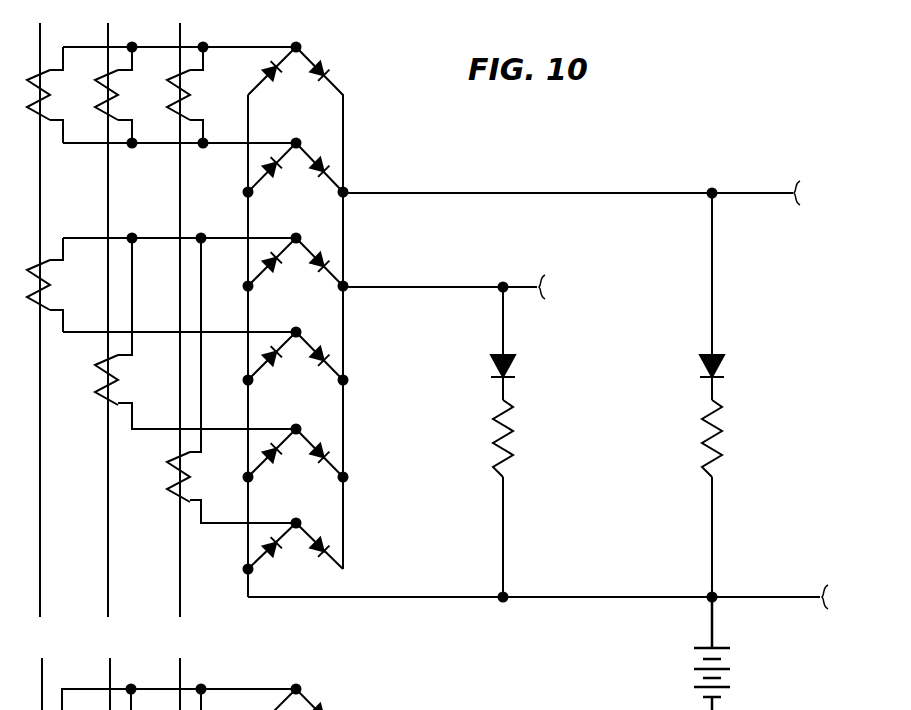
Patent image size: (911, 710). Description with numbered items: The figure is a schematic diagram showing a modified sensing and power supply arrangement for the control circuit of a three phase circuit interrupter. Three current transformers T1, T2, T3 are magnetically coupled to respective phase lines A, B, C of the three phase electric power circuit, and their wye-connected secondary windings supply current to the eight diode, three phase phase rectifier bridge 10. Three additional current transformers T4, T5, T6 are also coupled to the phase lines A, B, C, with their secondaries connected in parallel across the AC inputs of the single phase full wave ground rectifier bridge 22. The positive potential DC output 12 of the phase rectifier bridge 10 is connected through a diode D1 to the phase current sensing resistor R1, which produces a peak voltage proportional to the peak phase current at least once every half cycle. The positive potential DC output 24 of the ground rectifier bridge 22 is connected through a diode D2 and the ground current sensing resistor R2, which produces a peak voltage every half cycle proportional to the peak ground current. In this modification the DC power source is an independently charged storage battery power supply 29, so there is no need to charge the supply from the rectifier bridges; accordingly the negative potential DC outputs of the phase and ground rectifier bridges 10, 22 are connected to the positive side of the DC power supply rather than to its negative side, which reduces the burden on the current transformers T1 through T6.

The phase rectifier bridge 10 is at (305, 589).
The ground rectifier bridge 22 is at (302, 216).
The positive potential DC output of the phase rectifier bridge 12 is at (444, 281).
The positive potential DC output of the ground rectifier bridge 24 is at (571, 187).
The storage battery power supply 29 is at (725, 653).
The diode D1 is at (516, 366).
The diode D2 is at (725, 366).
The phase current sensing resistor R1 is at (517, 438).
The ground current sensing resistor R2 is at (726, 438).
The current transformer T1 is at (50, 285).
The current transformer T2 is at (195, 333).
The current transformer T3 is at (231, 380).
The current transformer T4 is at (50, 95).
The current transformer T5 is at (118, 95).
The current transformer T6 is at (190, 95).
The phase line A is at (39, 331).
The phase line B is at (107, 331).
The phase line C is at (179, 331).